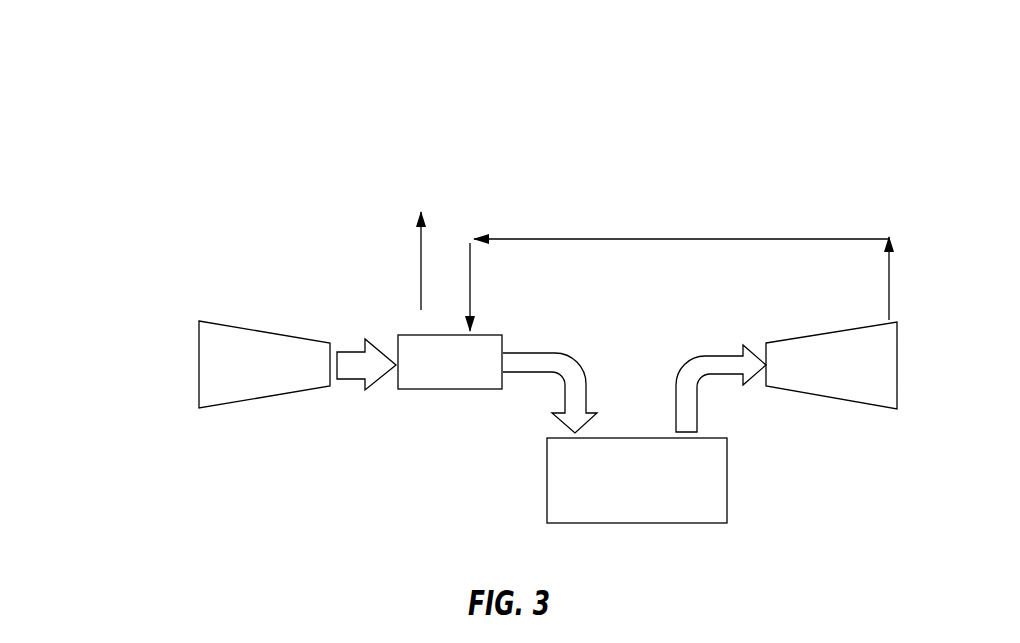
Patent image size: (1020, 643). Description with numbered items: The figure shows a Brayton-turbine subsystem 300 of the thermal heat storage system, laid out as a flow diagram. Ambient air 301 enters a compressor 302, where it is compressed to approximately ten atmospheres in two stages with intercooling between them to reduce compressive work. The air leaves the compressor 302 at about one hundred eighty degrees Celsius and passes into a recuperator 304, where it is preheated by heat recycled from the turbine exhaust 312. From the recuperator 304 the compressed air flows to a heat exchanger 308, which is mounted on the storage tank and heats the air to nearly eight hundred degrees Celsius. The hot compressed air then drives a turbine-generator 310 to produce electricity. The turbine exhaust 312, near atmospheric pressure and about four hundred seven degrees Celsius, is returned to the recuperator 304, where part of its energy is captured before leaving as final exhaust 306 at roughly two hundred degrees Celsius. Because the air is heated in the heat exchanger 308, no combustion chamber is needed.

The Brayton-turbine subsystem 300 is at (542, 105).
The ambient air 301 is at (108, 345).
The compressor 302 is at (239, 392).
The recuperator 304 is at (463, 383).
The exhaust 306 is at (375, 173).
The heat exchanger 308 is at (665, 498).
The turbine-generator 310 is at (853, 392).
The turbine exhaust 312 is at (697, 202).